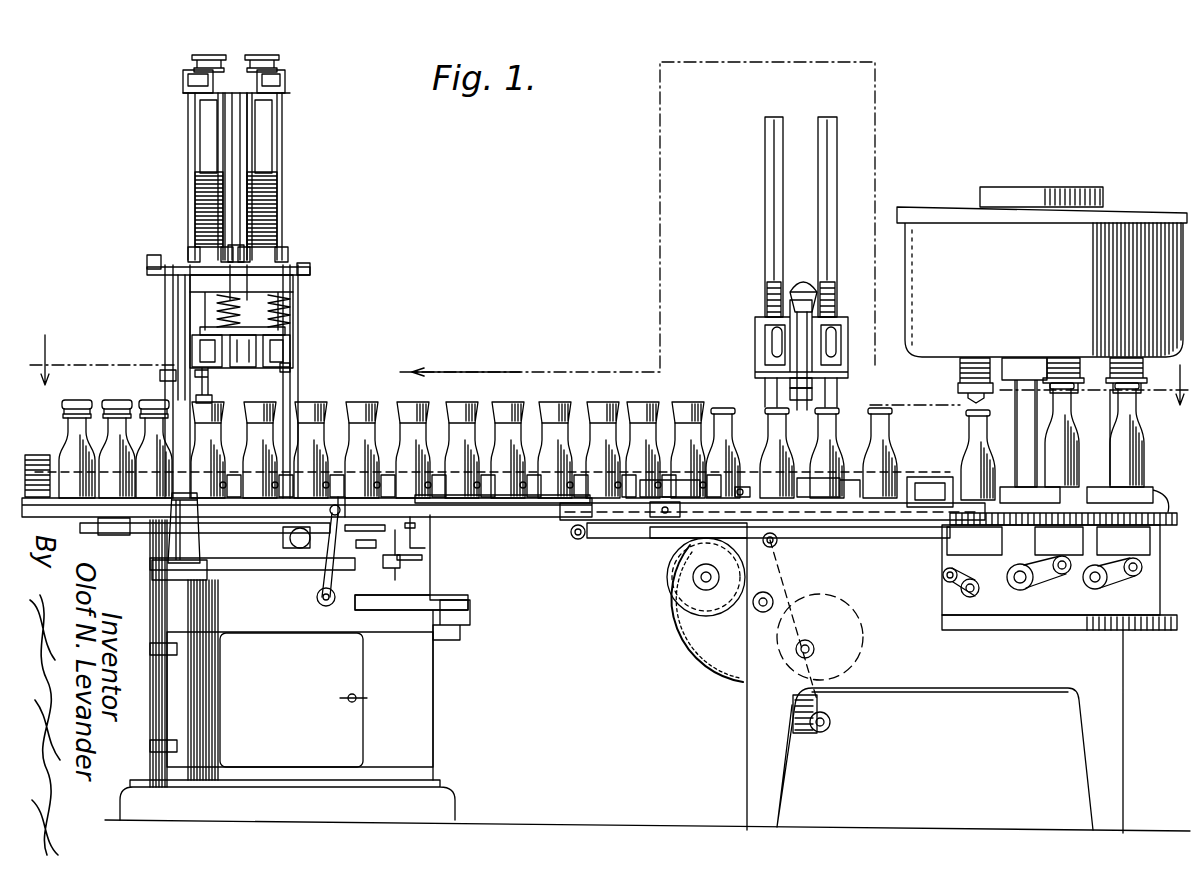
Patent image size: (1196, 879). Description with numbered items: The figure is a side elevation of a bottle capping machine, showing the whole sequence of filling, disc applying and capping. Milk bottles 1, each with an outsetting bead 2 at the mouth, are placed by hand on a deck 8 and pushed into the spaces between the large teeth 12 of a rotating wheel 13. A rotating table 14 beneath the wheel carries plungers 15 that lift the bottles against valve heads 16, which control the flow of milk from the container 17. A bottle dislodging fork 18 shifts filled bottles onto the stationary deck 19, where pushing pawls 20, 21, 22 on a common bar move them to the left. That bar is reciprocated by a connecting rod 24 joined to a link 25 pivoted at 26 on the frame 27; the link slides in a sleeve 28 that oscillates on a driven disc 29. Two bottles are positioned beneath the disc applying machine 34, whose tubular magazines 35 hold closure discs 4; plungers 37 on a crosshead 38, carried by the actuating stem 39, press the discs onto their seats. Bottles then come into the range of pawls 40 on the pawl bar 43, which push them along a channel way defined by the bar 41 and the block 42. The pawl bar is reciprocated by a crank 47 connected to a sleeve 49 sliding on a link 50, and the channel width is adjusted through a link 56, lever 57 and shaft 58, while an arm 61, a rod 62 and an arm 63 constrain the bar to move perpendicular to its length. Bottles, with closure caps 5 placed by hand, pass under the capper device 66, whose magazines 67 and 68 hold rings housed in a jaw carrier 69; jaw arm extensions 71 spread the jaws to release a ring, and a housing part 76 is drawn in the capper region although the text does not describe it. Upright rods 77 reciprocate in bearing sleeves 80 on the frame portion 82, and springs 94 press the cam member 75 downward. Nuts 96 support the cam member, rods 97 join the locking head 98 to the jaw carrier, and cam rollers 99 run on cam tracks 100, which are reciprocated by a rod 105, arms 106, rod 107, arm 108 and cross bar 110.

The milk bottle 1 is at (70, 437).
The outsetting bead 2 is at (607, 343).
The closure disc 4 is at (755, 345).
The closure cap 5 is at (190, 405).
The deck 8 is at (560, 523).
The large teeth 12 is at (958, 426).
The rotating wheel 13 is at (1115, 440).
The rotating table 14 is at (1150, 560).
The plungers 15 is at (1050, 487).
The valve heads 16 is at (958, 388).
The container 17 is at (935, 283).
The bottle dislodging fork 18 is at (918, 477).
The stationary deck 19 is at (925, 520).
The pushing pawl 20 is at (722, 490).
The pushing pawl 21 is at (820, 497).
The pushing pawl 22 is at (878, 497).
The connecting rod 24 is at (630, 538).
The link 25 is at (785, 590).
The pivot 26 is at (830, 720).
The frame 27 is at (788, 770).
The sleeve 28 is at (814, 642).
The driven disc 29 is at (855, 612).
The disc applying machine 34 is at (808, 108).
The tubular magazines 35 is at (774, 142).
The plungers 37 is at (767, 295).
The crosshead 38 is at (798, 285).
The actuating stem 39 is at (790, 392).
The pawl 40 is at (525, 490).
The bar 41 is at (36, 472).
The block 42 is at (652, 480).
The pawl bar 43 is at (372, 495).
The crank 47 is at (368, 540).
The sleeve 49 is at (335, 548).
The link 50 is at (303, 550).
The link 56 is at (373, 538).
The lever 57 is at (400, 560).
The shaft 58 is at (420, 555).
The arm 61 is at (415, 528).
The rod 62 is at (408, 540).
The arm 63 is at (95, 528).
The capper device 66 is at (180, 126).
The magazine 67 is at (206, 160).
The magazine 68 is at (260, 160).
The jaw carrier 69 is at (190, 248).
The jaw arm extensions 71 is at (253, 338).
The cam member 75 is at (200, 325).
The housing 76 is at (200, 300).
The upright rods 77 is at (175, 345).
The bearing sleeves 80 is at (180, 545).
The frame portion 82 is at (410, 680).
The springs 94 is at (215, 300).
The nuts 96 is at (183, 78).
The upright rods 97 is at (262, 212).
The locking head 98 is at (285, 78).
The cam rollers 99 is at (246, 258).
The cam tracks 100 is at (310, 266).
The rod 105 is at (205, 391).
The arms 106 is at (160, 375).
The rod 107 is at (172, 355).
The arm 108 is at (147, 283).
The cross bar 110 is at (154, 255).